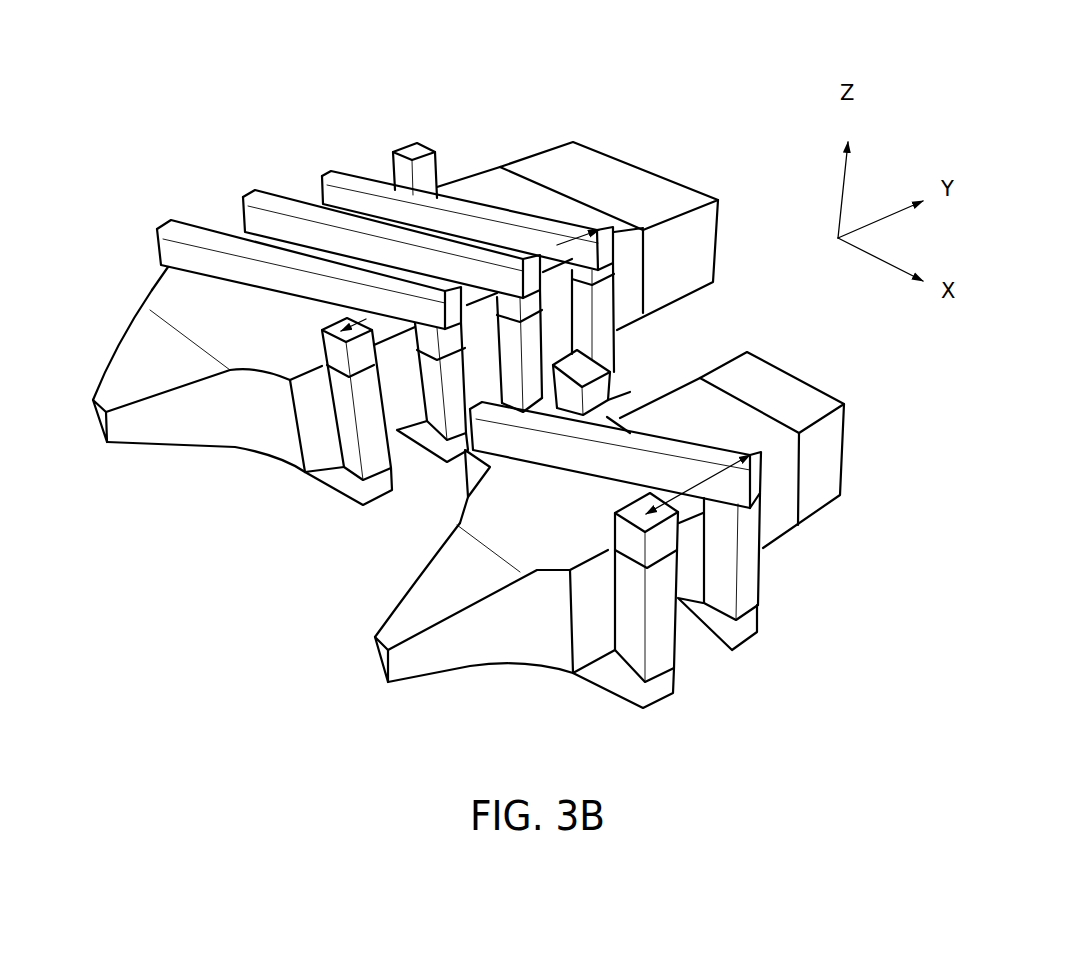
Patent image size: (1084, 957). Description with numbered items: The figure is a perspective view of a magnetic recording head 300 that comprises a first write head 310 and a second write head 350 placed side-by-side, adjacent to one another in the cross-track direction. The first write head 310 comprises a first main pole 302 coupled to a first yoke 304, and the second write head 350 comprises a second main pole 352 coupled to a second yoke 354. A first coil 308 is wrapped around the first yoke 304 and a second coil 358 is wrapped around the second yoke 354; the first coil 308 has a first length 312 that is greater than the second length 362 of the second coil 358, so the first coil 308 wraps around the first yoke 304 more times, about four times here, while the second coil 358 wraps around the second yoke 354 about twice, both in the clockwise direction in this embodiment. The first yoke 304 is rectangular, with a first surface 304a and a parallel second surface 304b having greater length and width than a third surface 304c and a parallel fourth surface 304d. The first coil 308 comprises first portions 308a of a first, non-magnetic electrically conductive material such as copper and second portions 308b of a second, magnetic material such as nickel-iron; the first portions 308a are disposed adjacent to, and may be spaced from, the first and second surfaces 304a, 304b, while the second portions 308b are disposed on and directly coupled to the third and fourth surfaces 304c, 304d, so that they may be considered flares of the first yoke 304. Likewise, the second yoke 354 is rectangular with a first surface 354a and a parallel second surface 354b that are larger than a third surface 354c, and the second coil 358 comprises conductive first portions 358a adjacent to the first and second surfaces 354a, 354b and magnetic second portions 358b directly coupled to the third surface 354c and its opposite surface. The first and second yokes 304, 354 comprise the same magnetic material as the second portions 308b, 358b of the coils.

The magnetic recording head 300 is at (266, 90).
The first main pole 302 is at (93, 412).
The first yoke 304 is at (278, 345).
The first surface 304a is at (163, 297).
The second surface 304b is at (249, 458).
The third surface 304c is at (683, 248).
The fourth surface 304d is at (462, 164).
The first coil 308 is at (357, 184).
The first portions 308a is at (197, 229).
The second portions 308b is at (163, 270).
The first write head 310 is at (158, 196).
The first length 312 is at (581, 228).
The second write head 350 is at (421, 702).
The second main pole 352 is at (381, 652).
The second yoke 354 is at (548, 545).
The first surface 354a is at (784, 396).
The second surface 354b is at (647, 394).
The third surface 354c is at (824, 450).
The second coil 358 is at (748, 566).
The first portions 358a is at (607, 461).
The second portions 358b is at (474, 471).
The second length 362 is at (693, 467).